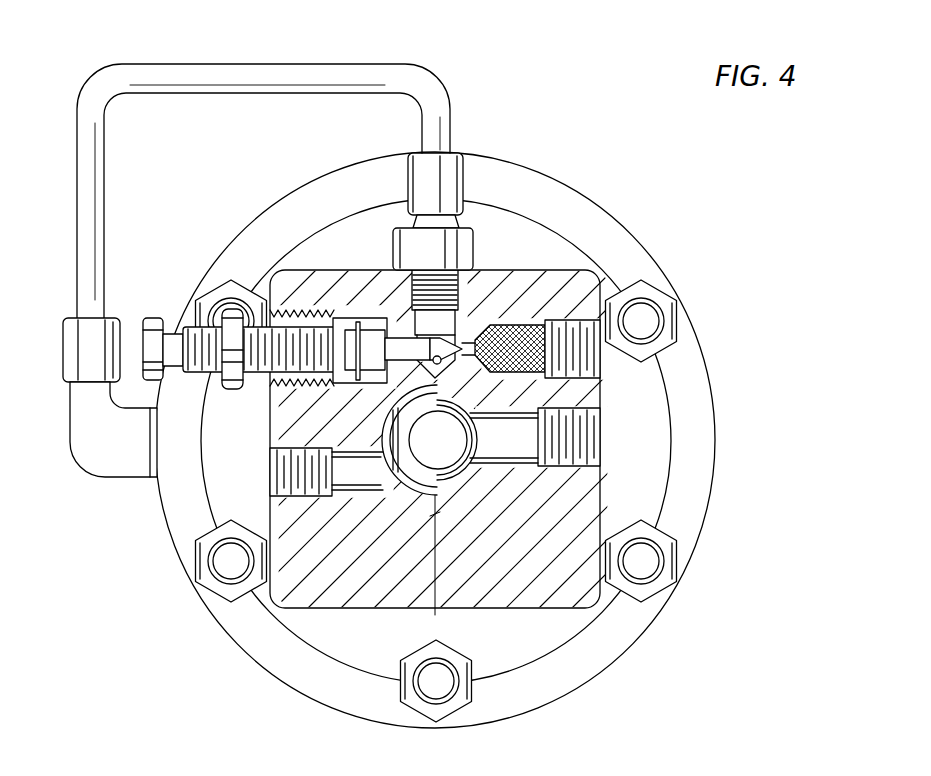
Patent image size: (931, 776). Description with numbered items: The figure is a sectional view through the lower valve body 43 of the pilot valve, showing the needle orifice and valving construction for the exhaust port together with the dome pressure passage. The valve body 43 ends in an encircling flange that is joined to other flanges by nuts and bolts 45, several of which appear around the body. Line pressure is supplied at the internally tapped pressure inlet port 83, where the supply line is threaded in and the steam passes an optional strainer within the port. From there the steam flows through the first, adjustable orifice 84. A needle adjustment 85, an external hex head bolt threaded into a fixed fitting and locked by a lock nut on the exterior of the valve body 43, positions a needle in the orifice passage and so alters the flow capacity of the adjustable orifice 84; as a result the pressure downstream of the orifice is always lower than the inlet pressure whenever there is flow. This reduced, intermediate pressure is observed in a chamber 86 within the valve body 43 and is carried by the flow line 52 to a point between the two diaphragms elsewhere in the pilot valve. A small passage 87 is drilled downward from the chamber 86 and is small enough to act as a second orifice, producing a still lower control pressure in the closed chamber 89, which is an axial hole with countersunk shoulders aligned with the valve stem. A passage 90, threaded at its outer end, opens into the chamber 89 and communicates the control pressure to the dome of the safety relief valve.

The lower valve body 43 is at (565, 585).
The nuts and bolts 45 is at (642, 316).
The flow line 52 is at (125, 77).
The pressure inlet port 83 is at (563, 332).
The adjustable orifice 84 is at (461, 337).
The needle adjustment 85 is at (347, 320).
The chamber 86 is at (367, 330).
The small passage 87 is at (441, 362).
The chamber 89 is at (383, 432).
The passage 90 is at (362, 476).